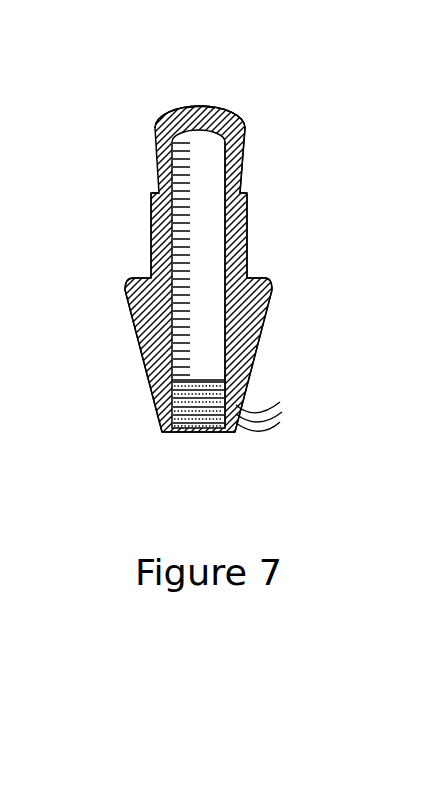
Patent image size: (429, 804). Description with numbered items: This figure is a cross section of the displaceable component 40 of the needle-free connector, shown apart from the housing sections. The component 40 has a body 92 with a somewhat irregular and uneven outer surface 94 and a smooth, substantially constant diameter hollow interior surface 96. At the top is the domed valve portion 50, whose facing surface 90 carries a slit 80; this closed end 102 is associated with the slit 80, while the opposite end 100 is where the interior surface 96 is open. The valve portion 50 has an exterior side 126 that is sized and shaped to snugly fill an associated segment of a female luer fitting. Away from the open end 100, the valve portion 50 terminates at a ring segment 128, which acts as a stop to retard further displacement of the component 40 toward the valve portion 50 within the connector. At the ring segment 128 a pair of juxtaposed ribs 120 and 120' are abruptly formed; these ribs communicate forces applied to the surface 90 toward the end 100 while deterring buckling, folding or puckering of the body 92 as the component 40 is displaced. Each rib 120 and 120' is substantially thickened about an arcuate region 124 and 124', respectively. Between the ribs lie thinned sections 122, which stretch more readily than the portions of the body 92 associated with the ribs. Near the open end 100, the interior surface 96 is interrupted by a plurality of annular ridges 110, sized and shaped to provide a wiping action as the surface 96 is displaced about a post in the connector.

The displaceable component 40 is at (318, 293).
The domed valve portion 50 is at (162, 112).
The slit 80 is at (198, 108).
The facing surface 90 is at (180, 107).
The body 92 is at (252, 225).
The outer surface 94 is at (140, 248).
The hollow interior surface 96 is at (203, 347).
The open end 100 is at (163, 433).
The end associated with slit 102 is at (231, 113).
The annular ridges 110 is at (245, 408).
The rib 120 is at (90, 361).
The rib 120' is at (310, 361).
The thinned sections 122 is at (203, 303).
The arcuate region 124 is at (93, 303).
The arcuate region 124' is at (325, 303).
The exterior side 126 is at (241, 133).
The ring segment 128 is at (155, 194).